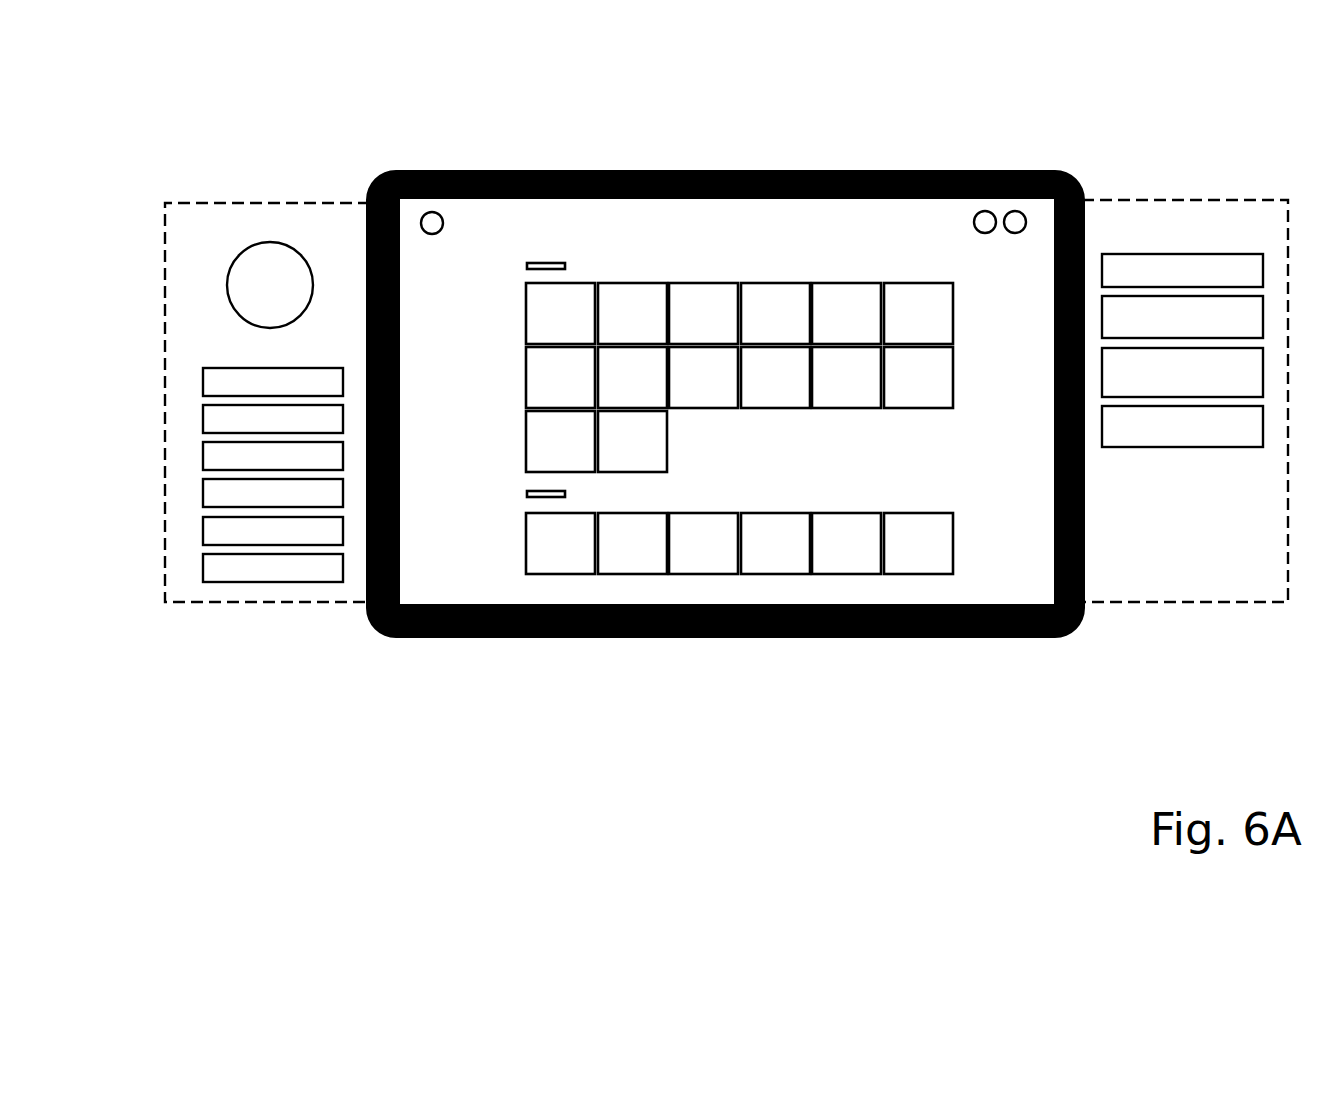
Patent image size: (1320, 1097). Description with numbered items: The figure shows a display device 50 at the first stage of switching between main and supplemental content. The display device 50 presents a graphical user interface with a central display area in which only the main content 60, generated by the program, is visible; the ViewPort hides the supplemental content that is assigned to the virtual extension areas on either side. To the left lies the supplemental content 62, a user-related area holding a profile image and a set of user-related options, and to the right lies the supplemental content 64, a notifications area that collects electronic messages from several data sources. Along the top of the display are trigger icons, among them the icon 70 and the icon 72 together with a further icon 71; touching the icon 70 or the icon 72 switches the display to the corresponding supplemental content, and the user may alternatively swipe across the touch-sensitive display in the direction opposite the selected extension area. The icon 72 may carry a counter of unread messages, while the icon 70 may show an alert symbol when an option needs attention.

The display device 50 is at (847, 124).
The main content 60 is at (739, 414).
The supplemental content 62 is at (267, 402).
The supplemental content 64 is at (1185, 401).
The icon 70 is at (443, 224).
The button 71 is at (973, 222).
The icon 72 is at (1017, 233).